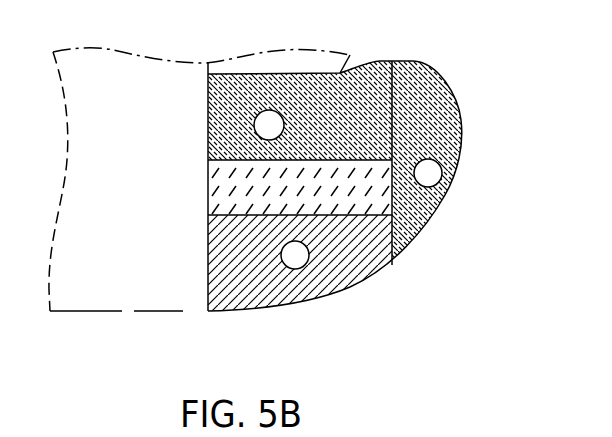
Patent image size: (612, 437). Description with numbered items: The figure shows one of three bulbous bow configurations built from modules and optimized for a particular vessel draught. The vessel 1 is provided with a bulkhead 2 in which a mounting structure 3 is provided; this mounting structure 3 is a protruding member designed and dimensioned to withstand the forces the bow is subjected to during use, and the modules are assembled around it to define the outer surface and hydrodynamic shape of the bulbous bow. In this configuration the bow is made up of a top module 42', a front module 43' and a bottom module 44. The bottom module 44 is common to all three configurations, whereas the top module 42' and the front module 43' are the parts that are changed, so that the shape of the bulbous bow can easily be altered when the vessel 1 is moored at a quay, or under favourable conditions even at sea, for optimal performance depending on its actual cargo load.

The vessel 1 is at (125, 280).
The bulkhead 2 is at (200, 288).
The mounting structure 3 is at (222, 182).
The top module 42' is at (310, 85).
The front module 43' is at (417, 164).
The bottom module 44 is at (295, 257).